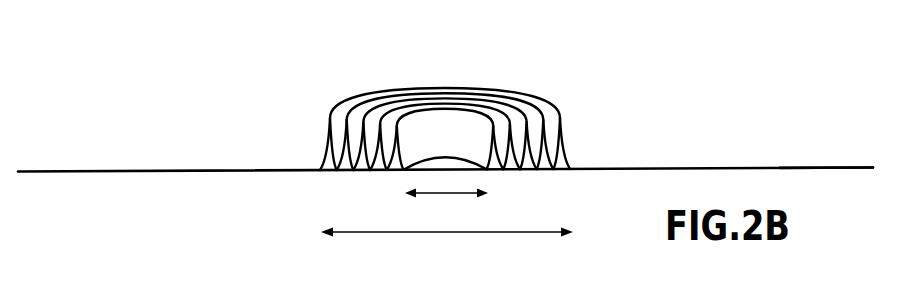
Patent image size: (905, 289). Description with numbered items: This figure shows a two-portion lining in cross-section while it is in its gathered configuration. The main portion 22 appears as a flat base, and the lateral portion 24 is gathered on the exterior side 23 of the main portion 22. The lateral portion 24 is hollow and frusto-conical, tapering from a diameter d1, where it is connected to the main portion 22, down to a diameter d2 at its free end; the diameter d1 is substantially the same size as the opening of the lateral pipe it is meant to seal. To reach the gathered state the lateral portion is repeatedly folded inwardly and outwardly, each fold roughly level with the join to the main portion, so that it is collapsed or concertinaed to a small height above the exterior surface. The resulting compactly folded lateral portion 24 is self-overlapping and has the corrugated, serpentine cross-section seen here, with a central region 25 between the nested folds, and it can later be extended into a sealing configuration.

The main portion 22 is at (719, 168).
The exterior side 23 is at (809, 166).
The lateral portion 24 is at (484, 87).
The central recess 25 is at (402, 171).
The diameter d1 is at (437, 233).
The diameter d2 is at (448, 194).